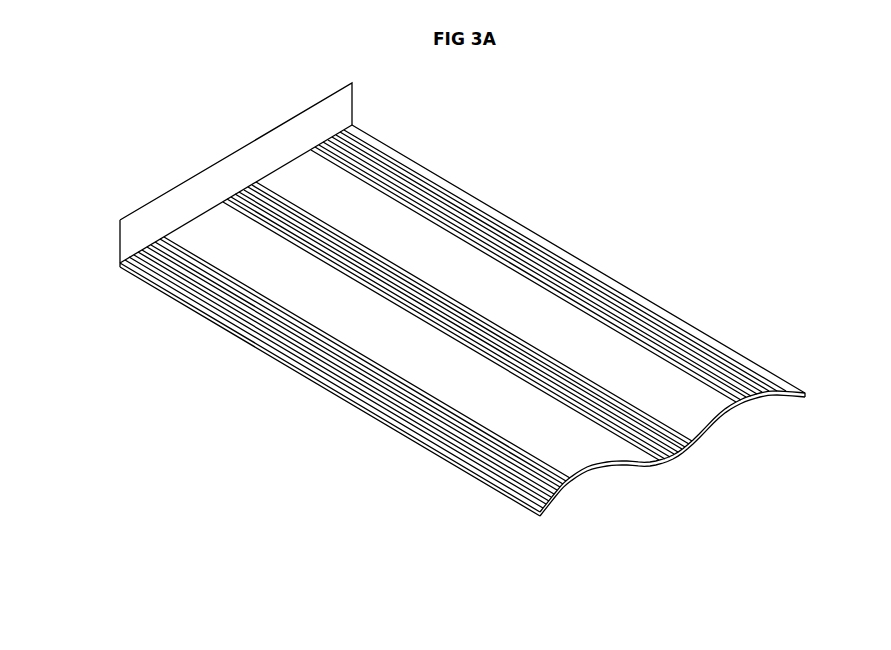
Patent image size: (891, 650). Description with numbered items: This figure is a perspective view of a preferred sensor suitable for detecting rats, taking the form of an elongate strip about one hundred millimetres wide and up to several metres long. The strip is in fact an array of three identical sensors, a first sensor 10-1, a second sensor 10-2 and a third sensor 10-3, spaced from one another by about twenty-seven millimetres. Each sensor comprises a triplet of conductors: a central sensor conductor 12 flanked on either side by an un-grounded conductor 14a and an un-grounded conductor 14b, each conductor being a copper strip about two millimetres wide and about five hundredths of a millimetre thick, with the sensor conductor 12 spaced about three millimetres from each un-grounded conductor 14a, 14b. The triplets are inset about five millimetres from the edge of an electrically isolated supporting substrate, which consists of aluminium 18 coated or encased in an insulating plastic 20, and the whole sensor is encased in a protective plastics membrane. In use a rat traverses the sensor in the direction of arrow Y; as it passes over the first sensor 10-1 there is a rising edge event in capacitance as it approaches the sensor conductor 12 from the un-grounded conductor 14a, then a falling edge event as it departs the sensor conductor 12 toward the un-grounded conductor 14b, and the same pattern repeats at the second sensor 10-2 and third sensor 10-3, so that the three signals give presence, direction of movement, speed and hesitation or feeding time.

The first sensor 10-1 is at (584, 489).
The second sensor 10-2 is at (694, 459).
The third sensor 10-3 is at (777, 405).
The sensor conductor 12 is at (370, 384).
The un-grounded conductor 14a is at (297, 358).
The un-grounded conductor 14b is at (442, 413).
The aluminium 18 is at (575, 317).
The insulating plastic 20 is at (570, 327).
The arrow Y is at (254, 257).